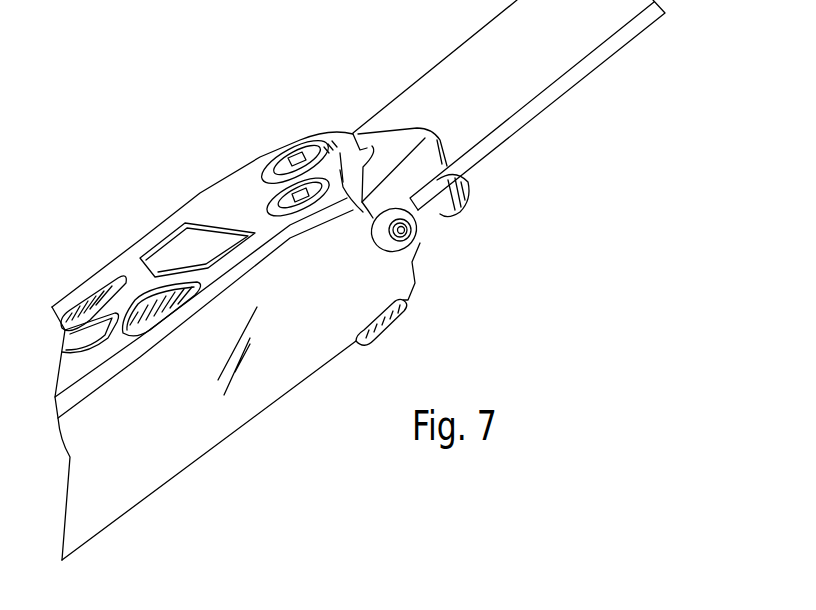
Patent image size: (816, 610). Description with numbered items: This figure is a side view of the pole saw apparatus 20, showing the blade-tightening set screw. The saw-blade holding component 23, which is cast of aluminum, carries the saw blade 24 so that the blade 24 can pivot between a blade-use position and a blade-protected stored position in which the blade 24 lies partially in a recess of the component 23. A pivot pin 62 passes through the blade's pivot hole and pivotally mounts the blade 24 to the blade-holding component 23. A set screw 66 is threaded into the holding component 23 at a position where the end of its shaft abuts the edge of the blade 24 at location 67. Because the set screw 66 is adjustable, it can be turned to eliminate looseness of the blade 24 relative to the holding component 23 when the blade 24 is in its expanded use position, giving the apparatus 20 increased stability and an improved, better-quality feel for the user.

The pole saw apparatus 20 is at (106, 105).
The saw-blade holding component 23 is at (160, 220).
The saw blade 24 is at (456, 44).
The pivot pin 62 is at (290, 160).
The set screw 66 is at (416, 222).
The location 67 is at (413, 245).